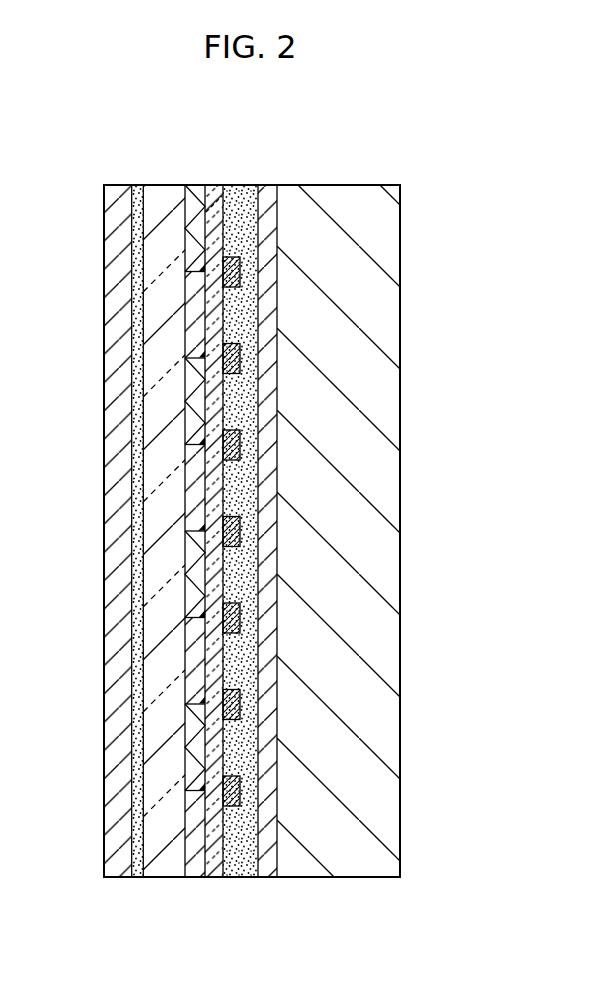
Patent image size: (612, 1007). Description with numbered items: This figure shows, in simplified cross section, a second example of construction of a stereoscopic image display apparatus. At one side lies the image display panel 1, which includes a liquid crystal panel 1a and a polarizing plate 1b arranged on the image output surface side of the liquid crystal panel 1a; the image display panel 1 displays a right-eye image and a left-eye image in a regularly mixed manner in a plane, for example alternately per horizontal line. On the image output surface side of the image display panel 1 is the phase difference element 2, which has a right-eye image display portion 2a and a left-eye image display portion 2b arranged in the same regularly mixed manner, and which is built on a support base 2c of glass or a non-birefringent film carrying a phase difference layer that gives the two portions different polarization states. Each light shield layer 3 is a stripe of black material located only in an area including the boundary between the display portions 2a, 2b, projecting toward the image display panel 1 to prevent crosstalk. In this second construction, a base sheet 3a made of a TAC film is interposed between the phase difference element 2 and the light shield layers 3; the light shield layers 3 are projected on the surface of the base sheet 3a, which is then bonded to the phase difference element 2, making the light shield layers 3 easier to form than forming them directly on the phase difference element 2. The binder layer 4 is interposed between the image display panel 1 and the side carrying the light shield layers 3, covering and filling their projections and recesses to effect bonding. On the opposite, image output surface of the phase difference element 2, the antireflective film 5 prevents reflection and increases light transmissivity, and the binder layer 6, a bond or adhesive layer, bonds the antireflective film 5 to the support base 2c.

The image display panel 1 is at (329, 578).
The liquid crystal panel 1a is at (318, 876).
The polarizing plate 1b is at (272, 560).
The phase difference element 2 is at (127, 531).
The right-eye image display portion 2a is at (187, 283).
The left-eye image display portion 2b is at (183, 247).
The support base 2c is at (160, 225).
The light shield layer 3 is at (225, 255).
The base sheet 3a is at (212, 198).
The binder layer 4 is at (232, 876).
The antireflective film 5 is at (110, 876).
The binder layer 6 is at (136, 876).